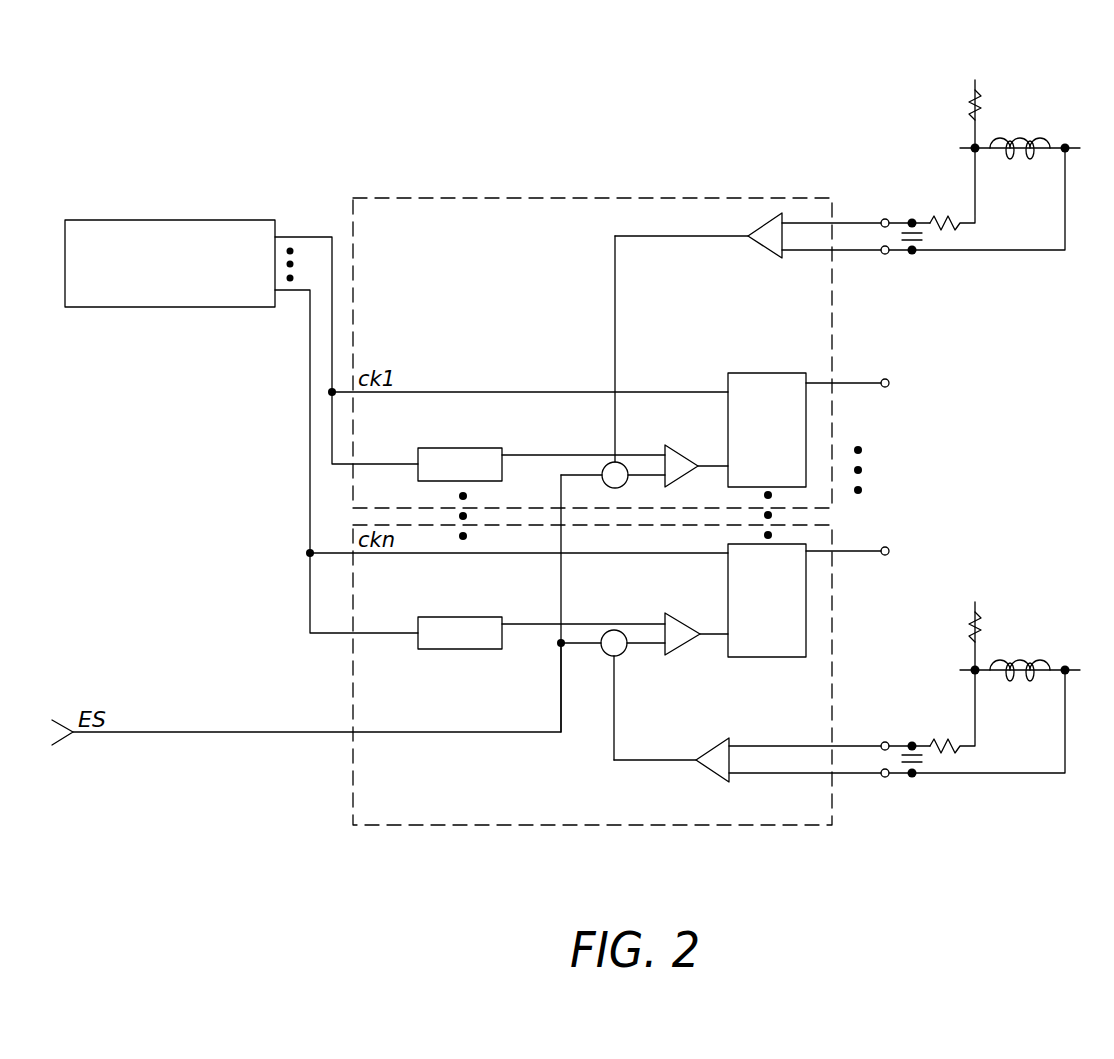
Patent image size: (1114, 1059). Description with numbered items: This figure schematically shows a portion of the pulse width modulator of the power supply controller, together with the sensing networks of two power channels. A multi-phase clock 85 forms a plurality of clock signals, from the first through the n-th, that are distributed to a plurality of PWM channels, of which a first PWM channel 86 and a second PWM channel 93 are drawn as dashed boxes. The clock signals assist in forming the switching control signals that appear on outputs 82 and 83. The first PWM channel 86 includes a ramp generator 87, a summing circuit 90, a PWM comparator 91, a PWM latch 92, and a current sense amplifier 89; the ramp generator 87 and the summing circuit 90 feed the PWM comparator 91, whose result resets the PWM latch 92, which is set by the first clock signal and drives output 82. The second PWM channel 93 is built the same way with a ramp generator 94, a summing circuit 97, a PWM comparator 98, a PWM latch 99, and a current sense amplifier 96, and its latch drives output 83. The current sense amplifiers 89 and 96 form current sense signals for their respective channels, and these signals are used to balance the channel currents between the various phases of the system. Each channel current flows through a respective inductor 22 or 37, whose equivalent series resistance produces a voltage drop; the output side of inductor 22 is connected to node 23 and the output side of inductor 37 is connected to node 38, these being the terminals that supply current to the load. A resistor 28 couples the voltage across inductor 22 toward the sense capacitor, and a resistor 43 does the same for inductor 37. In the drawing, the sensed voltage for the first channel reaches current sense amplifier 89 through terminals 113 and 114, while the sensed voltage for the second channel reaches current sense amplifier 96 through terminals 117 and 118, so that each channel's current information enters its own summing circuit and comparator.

The inductor 22 is at (1022, 136).
The node 23 is at (1066, 144).
The resistor 28 is at (968, 108).
The inductor 37 is at (1022, 680).
The node 38 is at (1068, 665).
The resistor 43 is at (982, 622).
The output 82 is at (889, 380).
The output 83 is at (889, 548).
The multi-phase clock 85 is at (170, 307).
The first PWM channel 86 is at (353, 232).
The ramp generator 87 is at (460, 448).
The current sense amplifier 89 is at (761, 228).
The summing circuit 90 is at (604, 466).
The PWM comparator 91 is at (684, 478).
The PWM latch 92 is at (728, 413).
The second PWM channel 93 is at (353, 690).
The ramp generator 94 is at (460, 649).
The current sense amplifier 96 is at (712, 750).
The summing circuit 97 is at (622, 655).
The PWM comparator 98 is at (686, 645).
The PWM latch 99 is at (770, 657).
The sense input terminal 113 is at (886, 219).
The sense input terminal 114 is at (886, 254).
The sense input terminal 117 is at (886, 742).
The sense input terminal 118 is at (886, 777).